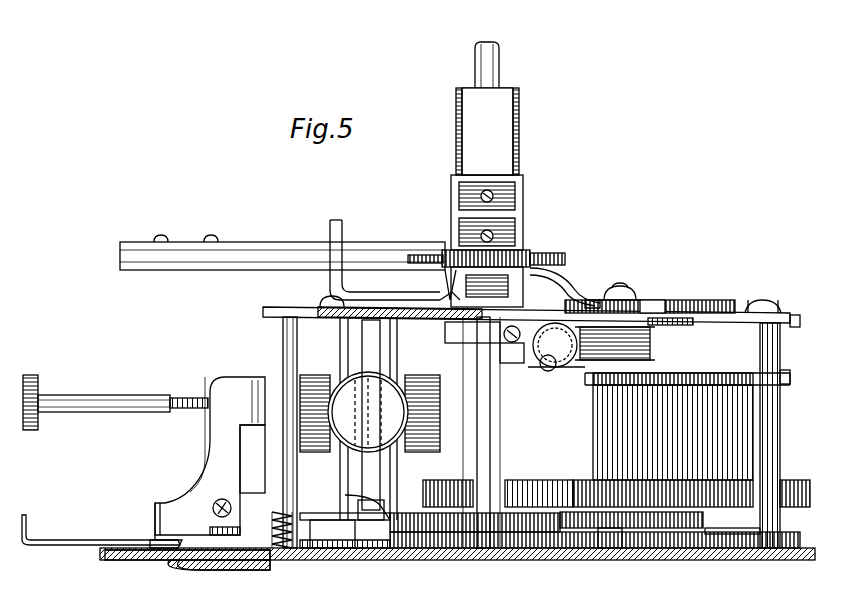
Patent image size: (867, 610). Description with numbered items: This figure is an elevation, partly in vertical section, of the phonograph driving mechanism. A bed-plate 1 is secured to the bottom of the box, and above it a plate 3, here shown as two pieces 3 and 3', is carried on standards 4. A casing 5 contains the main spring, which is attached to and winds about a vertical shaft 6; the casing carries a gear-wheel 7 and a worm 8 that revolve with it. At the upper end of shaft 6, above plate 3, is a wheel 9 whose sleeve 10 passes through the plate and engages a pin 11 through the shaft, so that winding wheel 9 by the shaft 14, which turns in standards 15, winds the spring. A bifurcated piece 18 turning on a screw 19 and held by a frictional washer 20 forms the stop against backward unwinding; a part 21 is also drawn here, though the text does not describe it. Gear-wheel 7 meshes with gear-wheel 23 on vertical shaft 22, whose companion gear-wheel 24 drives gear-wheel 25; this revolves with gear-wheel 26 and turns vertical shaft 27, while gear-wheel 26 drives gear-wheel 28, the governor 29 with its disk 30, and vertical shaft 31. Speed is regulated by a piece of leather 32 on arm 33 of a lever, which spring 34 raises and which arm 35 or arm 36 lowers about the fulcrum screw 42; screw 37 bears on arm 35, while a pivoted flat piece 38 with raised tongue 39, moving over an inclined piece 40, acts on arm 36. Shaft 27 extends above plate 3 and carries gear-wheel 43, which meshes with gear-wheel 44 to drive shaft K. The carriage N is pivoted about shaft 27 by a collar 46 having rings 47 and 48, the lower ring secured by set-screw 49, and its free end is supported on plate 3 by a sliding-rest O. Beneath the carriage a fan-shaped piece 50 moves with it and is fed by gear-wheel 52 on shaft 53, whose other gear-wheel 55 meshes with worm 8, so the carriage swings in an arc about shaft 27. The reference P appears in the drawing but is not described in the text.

The bed-plate 1 is at (703, 560).
The plate 3 is at (513, 302).
The plate piece 3' is at (804, 318).
The standards 4 is at (284, 336).
The casing 5 is at (690, 373).
The vertical shaft 6 is at (622, 540).
The gear-wheel 7 is at (440, 480).
The worm 8 is at (652, 345).
The wheel 9 is at (694, 300).
The sleeve 10 is at (594, 300).
The pin 11 is at (668, 318).
The shaft 14 is at (262, 243).
The standards 15 is at (341, 222).
The bifurcated piece of metal 18 is at (655, 300).
The screw 19 is at (620, 283).
The washer 20 is at (630, 290).
The spring arm 21 is at (568, 284).
The vertical shaft 22 is at (540, 548).
The gear-wheel 23 is at (585, 500).
The gear-wheel 24 is at (704, 520).
The gear-wheel 25 is at (455, 548).
The gear-wheel 26 is at (435, 532).
The vertical shaft 27 is at (478, 416).
The gear-wheel 28 is at (370, 520).
The governor 29 is at (395, 380).
The disk 30 is at (340, 522).
The vertical shaft 31 is at (380, 480).
The piece of leather 32 is at (330, 548).
The arm 33 is at (258, 493).
The spring 34 is at (275, 530).
The arm 35 is at (248, 377).
The arm 36 is at (158, 503).
The screw 37 is at (115, 398).
The flat piece of metal 38 is at (60, 540).
The raised tongue 39 is at (152, 542).
The inclined piece of metal 40 is at (165, 562).
The screw 42 is at (232, 508).
The gear-wheel 43 is at (522, 252).
The gear-wheel 44 is at (550, 256).
The collar 46 is at (440, 264).
The projecting ring 47 is at (446, 275).
The projecting ring 48 is at (446, 330).
The set-screw 49 is at (500, 350).
The fan-shaped piece of metal 50 is at (330, 300).
The gear-wheel 52 is at (546, 372).
The shaft 53 is at (552, 336).
The gear-wheel 55 is at (563, 372).
The shaft K is at (497, 44).
The carriage N is at (523, 210).
The sliding-rest O is at (444, 295).
The sleeve P is at (520, 113).